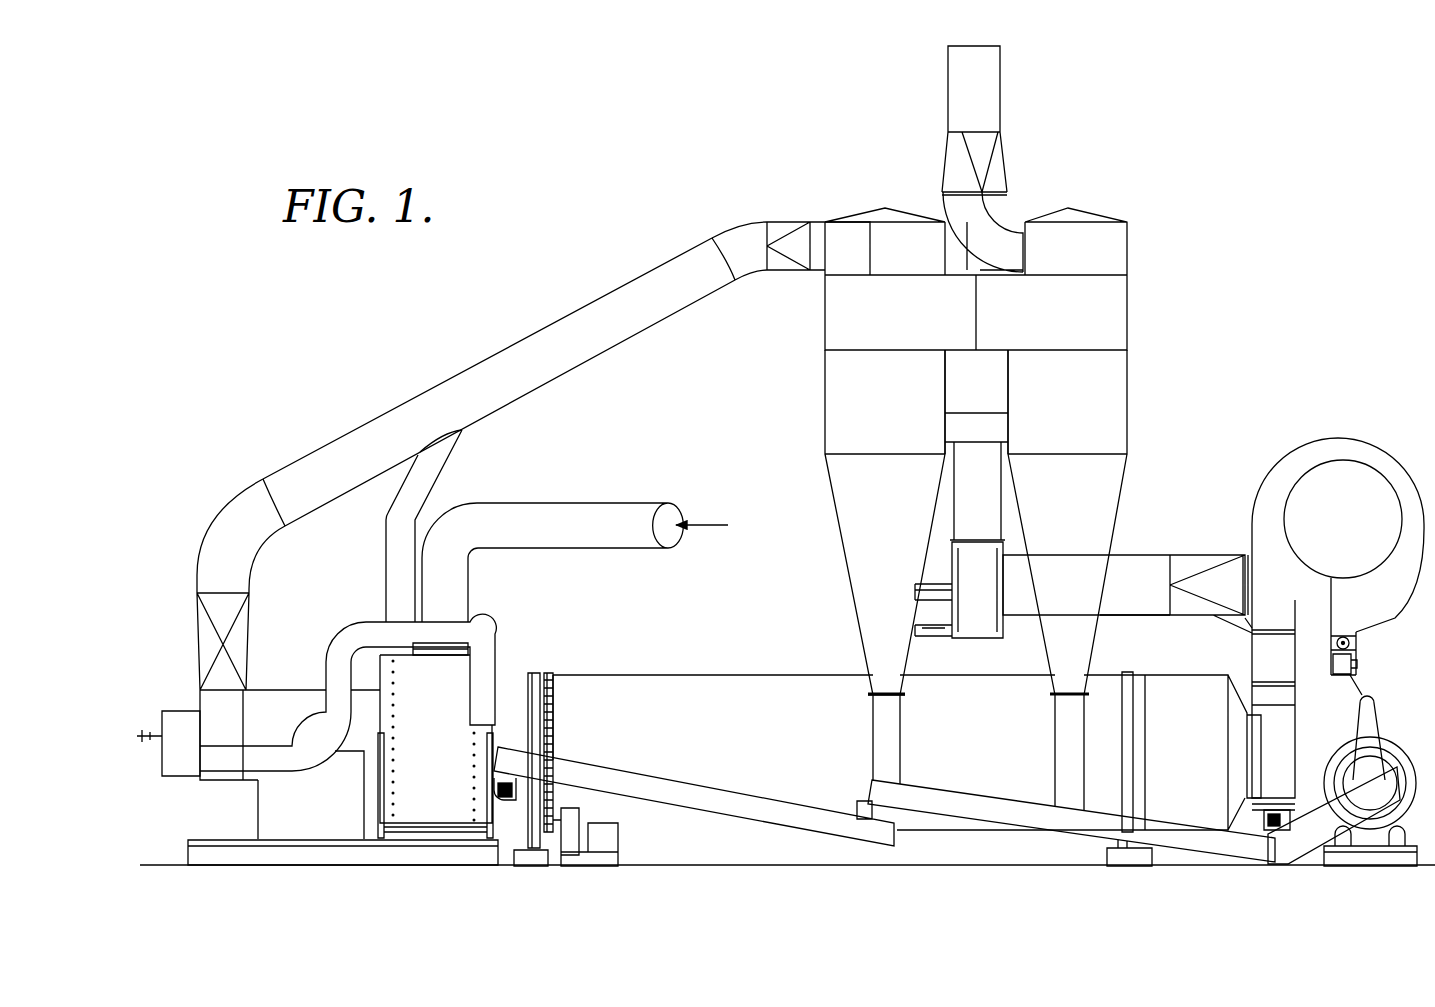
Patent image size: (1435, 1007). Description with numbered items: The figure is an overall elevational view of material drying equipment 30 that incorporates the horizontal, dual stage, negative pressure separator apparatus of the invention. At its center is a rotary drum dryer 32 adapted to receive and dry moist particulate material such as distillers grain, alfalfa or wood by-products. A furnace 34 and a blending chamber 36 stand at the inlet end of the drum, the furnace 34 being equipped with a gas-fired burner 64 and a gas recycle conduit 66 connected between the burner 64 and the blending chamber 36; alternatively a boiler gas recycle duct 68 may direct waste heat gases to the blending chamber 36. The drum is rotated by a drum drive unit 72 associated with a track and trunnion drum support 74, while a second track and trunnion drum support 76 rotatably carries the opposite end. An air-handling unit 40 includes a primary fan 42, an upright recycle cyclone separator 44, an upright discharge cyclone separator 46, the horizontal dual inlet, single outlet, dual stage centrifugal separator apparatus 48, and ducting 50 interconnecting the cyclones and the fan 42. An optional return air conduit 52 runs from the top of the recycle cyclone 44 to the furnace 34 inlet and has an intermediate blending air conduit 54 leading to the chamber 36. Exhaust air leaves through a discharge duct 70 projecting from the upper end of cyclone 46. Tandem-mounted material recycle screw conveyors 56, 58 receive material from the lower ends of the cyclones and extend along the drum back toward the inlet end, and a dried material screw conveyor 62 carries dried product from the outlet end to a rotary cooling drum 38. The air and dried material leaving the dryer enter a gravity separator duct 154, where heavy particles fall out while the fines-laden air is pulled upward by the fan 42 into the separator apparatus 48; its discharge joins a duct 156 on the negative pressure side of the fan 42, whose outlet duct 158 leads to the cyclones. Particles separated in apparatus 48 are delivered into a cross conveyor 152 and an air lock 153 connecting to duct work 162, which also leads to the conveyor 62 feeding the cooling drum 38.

The material drying equipment 30 is at (1074, 170).
The rotary drum dryer 32 is at (752, 638).
The furnace 34 is at (284, 690).
The blending chamber 36 is at (435, 746).
The rotary cooling drum 38 is at (1412, 745).
The air-handling unit 40 is at (1162, 305).
The primary fan 42 is at (966, 652).
The upright recycle cyclone separator 44 is at (822, 374).
The upright discharge cyclone separator 46 is at (1132, 400).
The dual stage centrifugal separator apparatus 48 is at (1322, 432).
The ducting 50 is at (1160, 550).
The return air conduit 52 is at (558, 302).
The blending air conduit 54 is at (462, 458).
The material recycle screw conveyor 56 is at (1005, 795).
The material recycle screw conveyor 58 is at (785, 778).
The dried material screw conveyor 62 is at (1312, 802).
The gas-fired burner 64 is at (180, 700).
The gas recycle conduit 66 is at (352, 615).
The boiler gas recycle duct 68 is at (627, 493).
The discharge duct 70 is at (965, 90).
The drum drive unit 72 is at (560, 662).
The track and trunnion drum support 74 is at (534, 668).
The track and trunnion drum support 76 is at (1142, 670).
The cross conveyor 152 is at (1357, 623).
The air lock 153 is at (1356, 650).
The gravity separator duct 154 is at (1290, 722).
The duct 156 is at (1130, 605).
The outlet duct 158 is at (992, 502).
The duct work 162 is at (1352, 690).